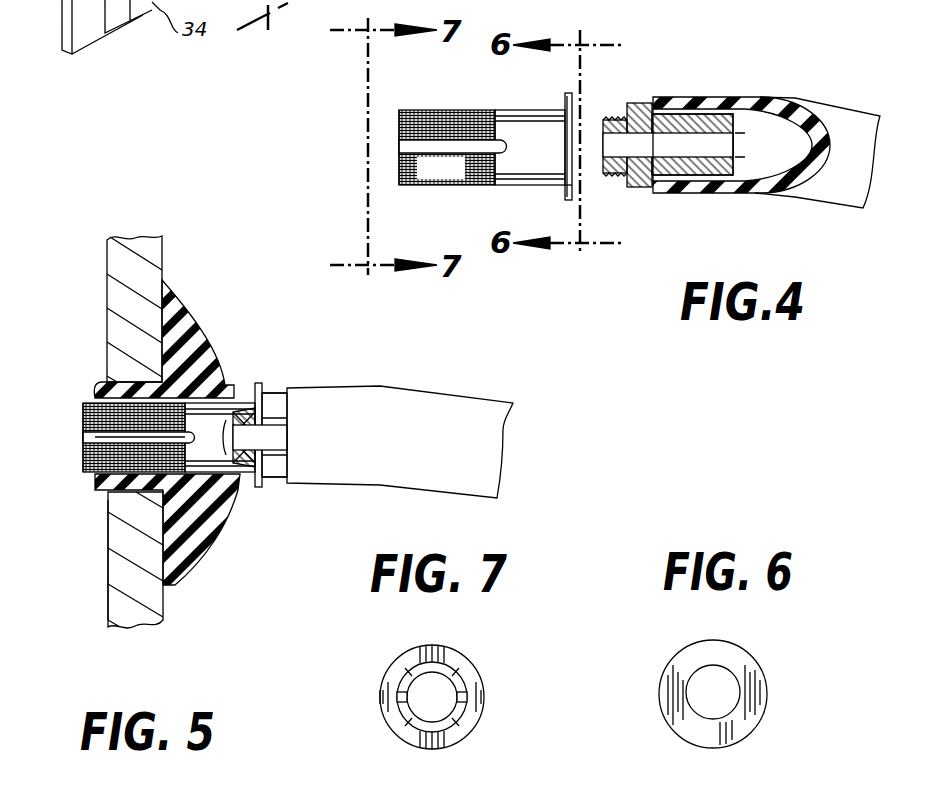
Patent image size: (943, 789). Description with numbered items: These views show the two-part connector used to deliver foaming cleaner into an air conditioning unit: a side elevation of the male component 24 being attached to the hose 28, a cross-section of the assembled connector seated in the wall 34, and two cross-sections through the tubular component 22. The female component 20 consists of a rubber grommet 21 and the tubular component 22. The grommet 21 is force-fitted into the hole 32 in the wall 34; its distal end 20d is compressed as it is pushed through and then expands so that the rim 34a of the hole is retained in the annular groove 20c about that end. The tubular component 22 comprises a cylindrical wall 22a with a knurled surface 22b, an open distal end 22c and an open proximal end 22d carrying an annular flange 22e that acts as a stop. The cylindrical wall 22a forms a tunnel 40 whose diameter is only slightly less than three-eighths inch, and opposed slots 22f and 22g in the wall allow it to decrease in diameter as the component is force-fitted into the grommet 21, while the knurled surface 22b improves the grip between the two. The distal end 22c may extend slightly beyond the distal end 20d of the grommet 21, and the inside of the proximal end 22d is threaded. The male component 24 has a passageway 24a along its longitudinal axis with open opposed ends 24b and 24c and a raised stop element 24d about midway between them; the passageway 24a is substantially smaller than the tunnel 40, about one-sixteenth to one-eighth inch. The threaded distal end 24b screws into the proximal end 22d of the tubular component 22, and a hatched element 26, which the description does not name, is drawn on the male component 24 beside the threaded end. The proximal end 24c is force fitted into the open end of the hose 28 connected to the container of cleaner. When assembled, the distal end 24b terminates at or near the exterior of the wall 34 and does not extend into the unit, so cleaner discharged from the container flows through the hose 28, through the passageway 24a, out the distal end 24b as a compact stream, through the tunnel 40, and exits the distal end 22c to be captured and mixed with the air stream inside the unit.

In FIG. 5, the female component 20 is at (142, 438).
In FIG. 5, the annular groove 20c is at (125, 381).
In FIG. 5, the distal end 20d is at (100, 386).
In FIG. 5, the rubber grommet 21 is at (207, 337).
In FIG. 4, the tubular component 22 is at (466, 148).
In FIG. 5, the tubular component 22 is at (144, 442).
In FIG. 7, the cylindrical wall 22a is at (462, 672).
In FIG. 4, the knurled surface 22b is at (441, 169).
In FIG. 4, the open distal end 22c is at (399, 125).
In FIG. 5, the open distal end 22c is at (83, 420).
In FIG. 4, the open proximal end 22d is at (582, 182).
In FIG. 4, the annular flange 22e is at (566, 97).
In FIG. 7, the annular flange 22e is at (462, 655).
In FIG. 6, the annular flange 22e is at (755, 712).
In FIG. 7, the slot 22f is at (381, 702).
In FIG. 4, the slot 22g is at (405, 147).
In FIG. 5, the slot 22g is at (88, 438).
In FIG. 7, the slot 22g is at (467, 697).
In FIG. 4, the male component 24 is at (710, 132).
In FIG. 5, the male component 24 is at (291, 420).
In FIG. 4, the passageway 24a is at (690, 115).
In FIG. 5, the passageway 24a is at (238, 412).
In FIG. 4, the distal end 24b is at (604, 138).
In FIG. 5, the distal end 24b is at (246, 440).
In FIG. 4, the proximal end 24c is at (740, 147).
In FIG. 4, the raised stop element 24d is at (660, 97).
In FIG. 5, the raised stop element 24d is at (272, 475).
In FIG. 4, the nut 26 is at (632, 103).
In FIG. 4, the hose 28 is at (825, 105).
In FIG. 5, the hose 28 is at (500, 402).
In FIG. 5, the hole 32 is at (100, 493).
In FIG. 5, the wall 34 is at (135, 625).
In FIG. 5, the rim 34a is at (181, 537).
In FIG. 6, the passageway or tunnel 40 is at (707, 708).